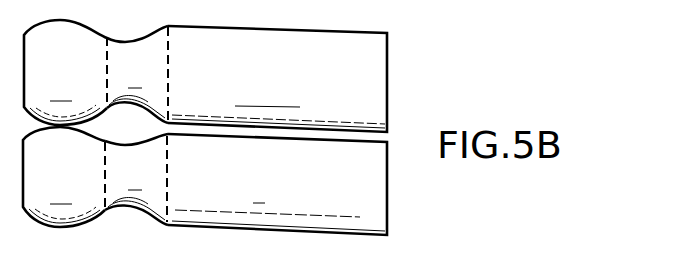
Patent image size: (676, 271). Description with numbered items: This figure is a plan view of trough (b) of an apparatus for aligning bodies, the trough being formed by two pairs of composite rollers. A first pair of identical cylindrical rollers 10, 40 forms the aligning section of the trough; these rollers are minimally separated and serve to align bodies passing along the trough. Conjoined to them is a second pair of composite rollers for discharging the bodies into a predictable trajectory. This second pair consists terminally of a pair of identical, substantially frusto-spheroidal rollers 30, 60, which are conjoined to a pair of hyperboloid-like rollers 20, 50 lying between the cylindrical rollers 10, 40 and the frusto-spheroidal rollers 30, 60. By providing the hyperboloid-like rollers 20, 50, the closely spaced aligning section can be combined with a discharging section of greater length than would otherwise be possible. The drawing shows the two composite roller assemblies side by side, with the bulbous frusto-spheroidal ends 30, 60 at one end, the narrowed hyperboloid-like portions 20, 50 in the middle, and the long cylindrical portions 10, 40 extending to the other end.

The cylindrical roller 10 is at (323, 32).
The hyperboloid-like roller 20 is at (133, 42).
The frusto-spheroidal roller 30 is at (62, 20).
The cylindrical roller 40 is at (387, 144).
The hyperboloid-like roller 50 is at (123, 213).
The frusto-spheroidal roller 60 is at (62, 227).